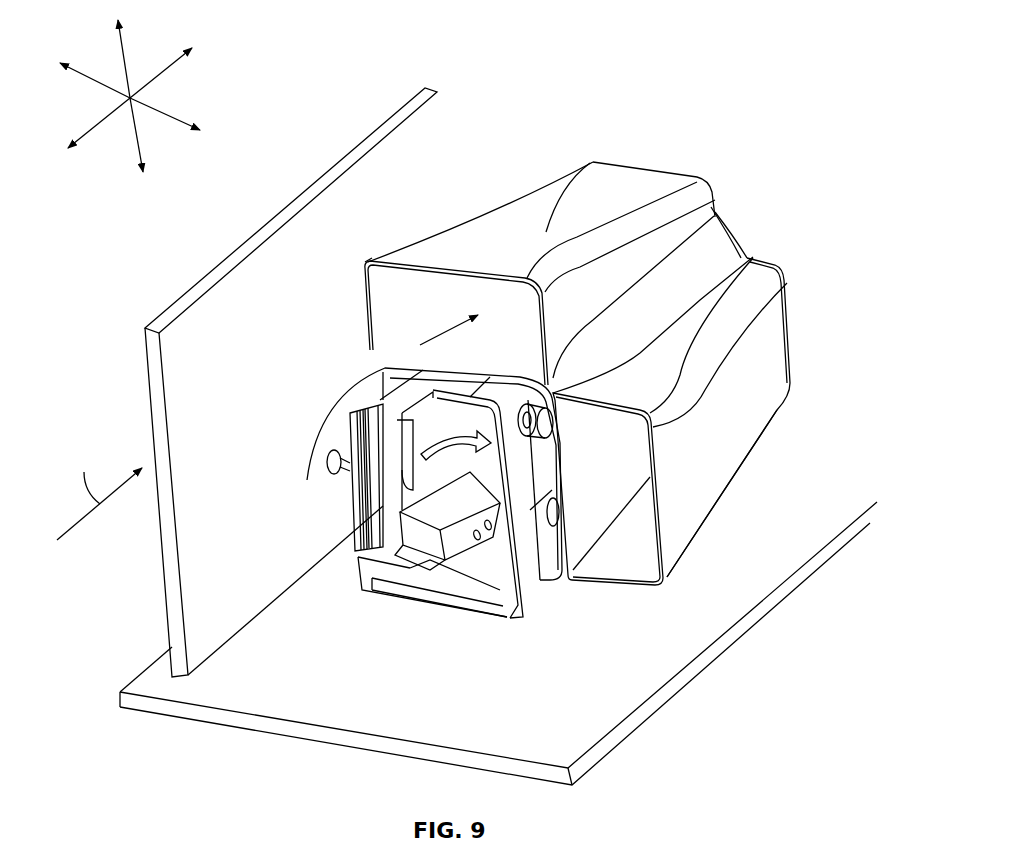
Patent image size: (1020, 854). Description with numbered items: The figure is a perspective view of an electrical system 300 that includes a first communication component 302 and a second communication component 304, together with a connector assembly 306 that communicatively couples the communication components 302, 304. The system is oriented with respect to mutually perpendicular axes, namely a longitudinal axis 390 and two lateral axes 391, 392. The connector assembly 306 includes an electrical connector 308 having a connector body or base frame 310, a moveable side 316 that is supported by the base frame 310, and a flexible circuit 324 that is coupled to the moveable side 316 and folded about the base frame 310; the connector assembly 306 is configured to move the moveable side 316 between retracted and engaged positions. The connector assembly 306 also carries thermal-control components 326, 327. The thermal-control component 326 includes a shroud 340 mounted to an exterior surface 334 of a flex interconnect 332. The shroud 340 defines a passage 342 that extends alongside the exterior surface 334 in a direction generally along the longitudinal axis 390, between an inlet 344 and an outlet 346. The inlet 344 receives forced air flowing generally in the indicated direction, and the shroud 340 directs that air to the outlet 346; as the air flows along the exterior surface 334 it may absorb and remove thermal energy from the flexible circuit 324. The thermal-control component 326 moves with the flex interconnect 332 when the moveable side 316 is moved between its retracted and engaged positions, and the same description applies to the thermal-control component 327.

The electrical system 300 is at (473, 403).
The first communication component 302 is at (195, 288).
The second communication component 304 is at (272, 727).
The connector assembly 306 is at (586, 380).
The electrical connector 308 is at (611, 344).
The base frame 310 is at (531, 594).
The moveable side 316 is at (422, 485).
The flexible circuit 324 is at (722, 236).
The thermal-control component 326 is at (507, 200).
The thermal-control component 327 is at (735, 412).
The flex interconnect 332 is at (745, 262).
The exterior surface 334 is at (473, 338).
The shroud 340 is at (586, 165).
The passage 342 is at (332, 477).
The inlet 344 is at (396, 283).
The outlet 346 is at (672, 158).
The longitudinal axis 390 is at (172, 68).
The lateral axis 391 is at (167, 118).
The lateral axis 392 is at (128, 68).